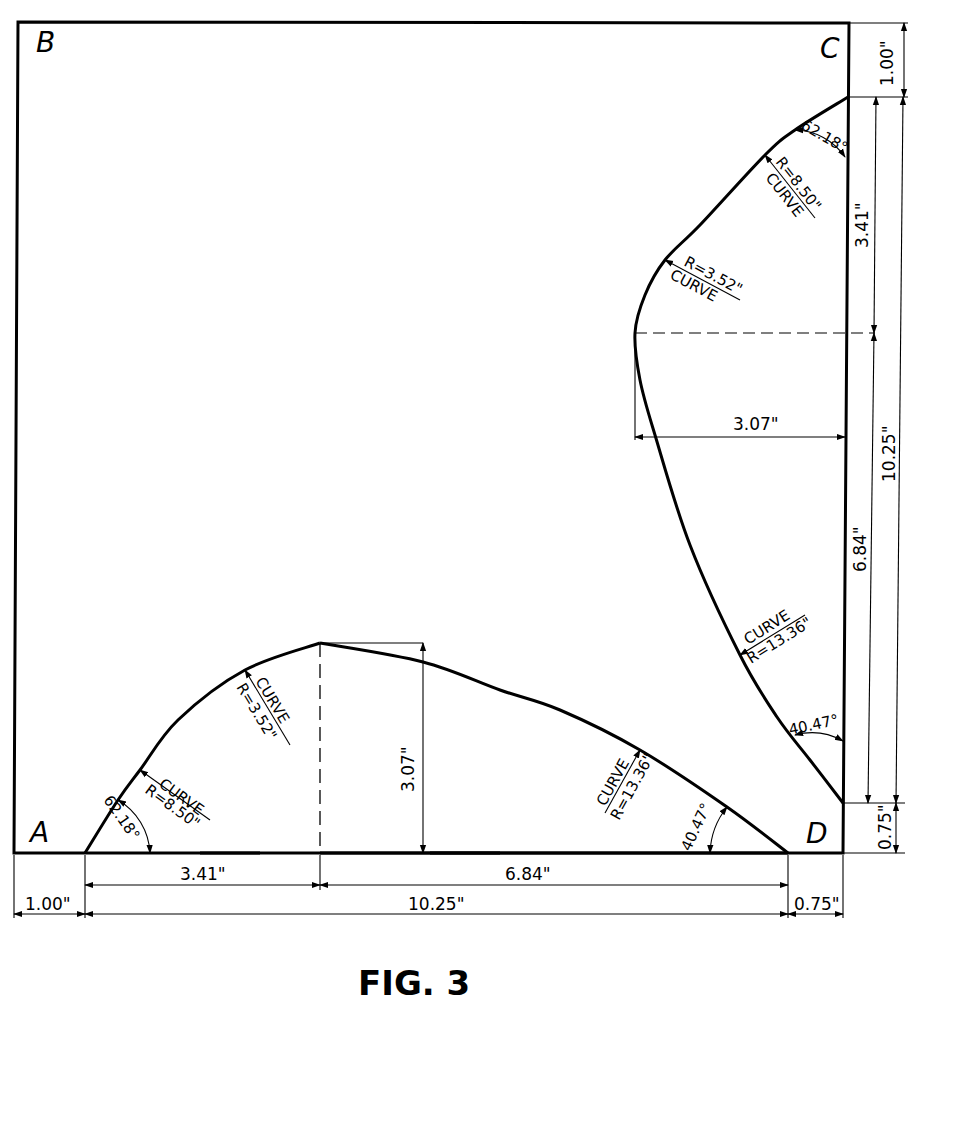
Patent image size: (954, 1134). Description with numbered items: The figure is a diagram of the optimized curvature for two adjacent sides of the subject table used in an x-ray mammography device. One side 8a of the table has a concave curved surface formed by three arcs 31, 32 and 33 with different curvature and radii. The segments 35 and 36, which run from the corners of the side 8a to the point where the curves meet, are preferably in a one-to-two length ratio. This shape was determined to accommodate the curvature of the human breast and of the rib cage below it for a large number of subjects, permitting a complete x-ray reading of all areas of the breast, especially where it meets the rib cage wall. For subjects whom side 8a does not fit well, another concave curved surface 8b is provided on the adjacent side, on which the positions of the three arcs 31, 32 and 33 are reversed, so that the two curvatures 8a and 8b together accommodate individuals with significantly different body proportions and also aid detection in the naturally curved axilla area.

The arc 31 is at (178, 718).
The arc 32 is at (560, 710).
The arc 33 is at (320, 643).
The segment 35 is at (232, 850).
The segment 36 is at (455, 853).
The side of the subject table 8a is at (382, 850).
The concave curved surface 8b is at (840, 488).